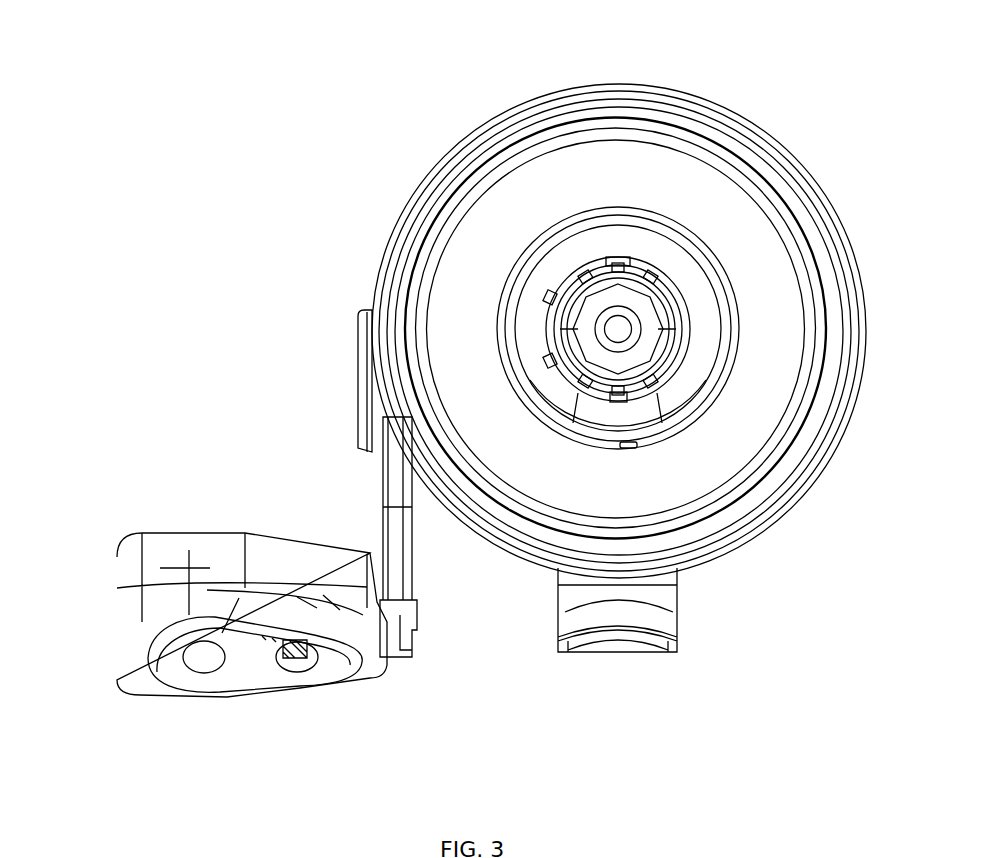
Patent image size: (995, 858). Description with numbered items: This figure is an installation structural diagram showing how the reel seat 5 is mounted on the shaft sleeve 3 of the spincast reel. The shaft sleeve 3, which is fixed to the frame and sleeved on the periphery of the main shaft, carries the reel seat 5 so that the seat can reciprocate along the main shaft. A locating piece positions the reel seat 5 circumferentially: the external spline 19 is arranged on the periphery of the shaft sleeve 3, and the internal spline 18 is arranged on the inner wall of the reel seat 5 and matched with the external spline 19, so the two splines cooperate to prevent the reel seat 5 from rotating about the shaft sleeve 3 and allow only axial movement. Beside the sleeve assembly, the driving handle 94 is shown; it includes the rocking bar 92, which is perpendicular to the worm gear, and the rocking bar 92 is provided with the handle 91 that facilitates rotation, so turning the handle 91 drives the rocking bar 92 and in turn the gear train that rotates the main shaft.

The shaft sleeve 3 is at (650, 280).
The reel seat 5 is at (553, 328).
The internal spline 18 is at (562, 295).
The external spline 19 is at (590, 280).
The handle 91 is at (153, 607).
The rocking bar 92 is at (372, 520).
The driving handle 94 is at (388, 677).